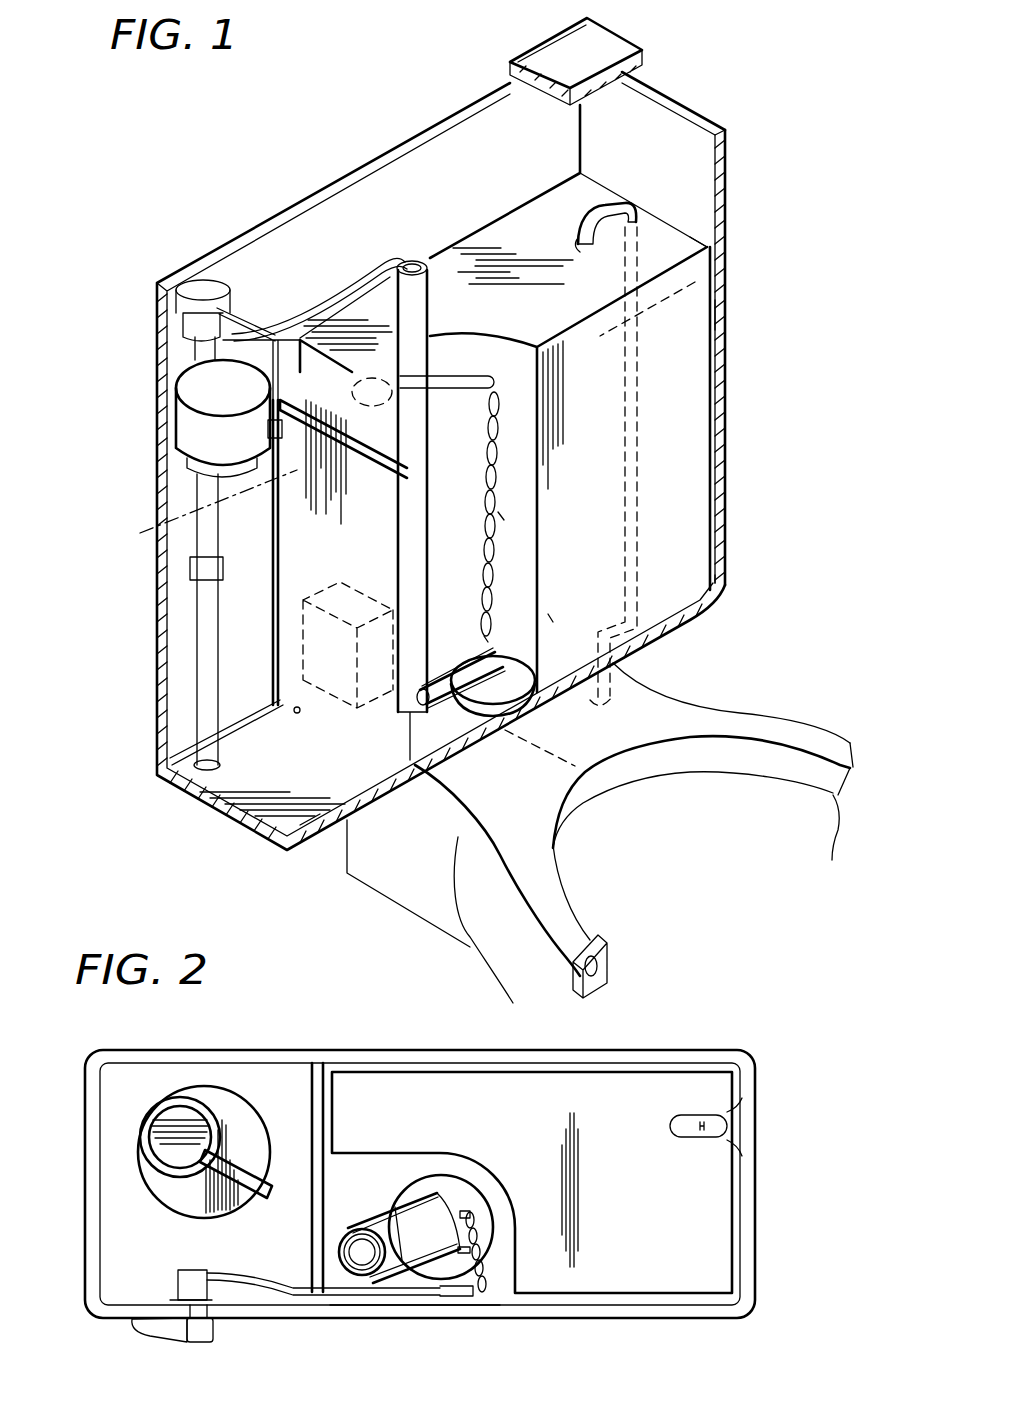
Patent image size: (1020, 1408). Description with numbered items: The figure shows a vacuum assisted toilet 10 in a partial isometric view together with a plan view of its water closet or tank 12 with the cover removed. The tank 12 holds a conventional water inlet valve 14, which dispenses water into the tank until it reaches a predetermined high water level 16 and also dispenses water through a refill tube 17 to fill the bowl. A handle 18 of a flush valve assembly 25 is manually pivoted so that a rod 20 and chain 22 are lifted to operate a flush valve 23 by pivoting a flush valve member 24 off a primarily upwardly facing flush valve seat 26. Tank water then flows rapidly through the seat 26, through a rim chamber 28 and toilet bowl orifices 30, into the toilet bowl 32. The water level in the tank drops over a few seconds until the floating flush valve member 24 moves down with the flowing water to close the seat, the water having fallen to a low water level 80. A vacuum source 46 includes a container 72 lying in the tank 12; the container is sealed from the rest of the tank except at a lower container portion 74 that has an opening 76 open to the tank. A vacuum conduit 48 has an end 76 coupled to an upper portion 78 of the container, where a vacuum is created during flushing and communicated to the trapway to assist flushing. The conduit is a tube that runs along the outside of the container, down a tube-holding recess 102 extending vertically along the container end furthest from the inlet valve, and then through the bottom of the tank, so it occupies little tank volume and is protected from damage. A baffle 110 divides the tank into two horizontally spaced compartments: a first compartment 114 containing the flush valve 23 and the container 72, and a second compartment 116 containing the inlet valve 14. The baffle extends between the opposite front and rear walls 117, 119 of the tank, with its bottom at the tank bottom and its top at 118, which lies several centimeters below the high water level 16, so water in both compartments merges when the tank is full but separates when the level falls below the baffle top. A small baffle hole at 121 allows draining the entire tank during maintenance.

In FIG. 1, the vacuum assisted toilet 10 is at (690, 74).
In FIG. 1, the tank 12 is at (726, 198).
In FIG. 2, the tank 12 is at (498, 1052).
In FIG. 1, the water inlet valve 14 is at (200, 282).
In FIG. 2, the water inlet valve 14 is at (207, 1084).
In FIG. 1, the high water level 16 is at (702, 276).
In FIG. 1, the refill tube 17 is at (407, 260).
In FIG. 1, the handle 18 is at (138, 533).
In FIG. 2, the handle 18 is at (153, 1333).
In FIG. 1, the rod 20 is at (462, 372).
In FIG. 1, the chain 22 is at (498, 402).
In FIG. 2, the chain 22 is at (483, 1290).
In FIG. 1, the flush valve 23 is at (487, 640).
In FIG. 2, the flush valve 23 is at (483, 1250).
In FIG. 1, the flush valve member 24 is at (550, 618).
In FIG. 1, the flush valve assembly 25 is at (504, 516).
In FIG. 2, the flush valve assembly 25 is at (224, 1333).
In FIG. 1, the flush valve seat 26 is at (478, 636).
In FIG. 1, the rim chamber 28 is at (587, 750).
In FIG. 1, the toilet bowl orifices 30 is at (612, 978).
In FIG. 1, the toilet bowl 32 is at (500, 978).
In FIG. 1, the vacuum source 46 is at (732, 313).
In FIG. 1, the vacuum conduit 48 is at (638, 204).
In FIG. 2, the vacuum conduit 48 is at (732, 1133).
In FIG. 1, the container 72 is at (695, 382).
In FIG. 2, the container 72 is at (565, 1085).
In FIG. 1, the lower container portion 74 is at (722, 573).
In FIG. 1, the opening / conduit end 76 is at (578, 238).
In FIG. 1, the upper portion of the container 78 is at (705, 255).
In FIG. 1, the low water level 80 is at (540, 627).
In FIG. 2, the tube-holding recess 102 is at (735, 1123).
In FIG. 1, the baffle 110 is at (410, 729).
In FIG. 2, the baffle 110 is at (300, 1080).
In FIG. 1, the first compartment 114 is at (437, 767).
In FIG. 1, the second compartment 116 is at (312, 815).
In FIG. 2, the front wall 117 is at (347, 1317).
In FIG. 1, the top of the baffle 118 is at (299, 368).
In FIG. 2, the rear wall 119 is at (387, 1053).
In FIG. 1, the baffle hole 121 is at (300, 713).